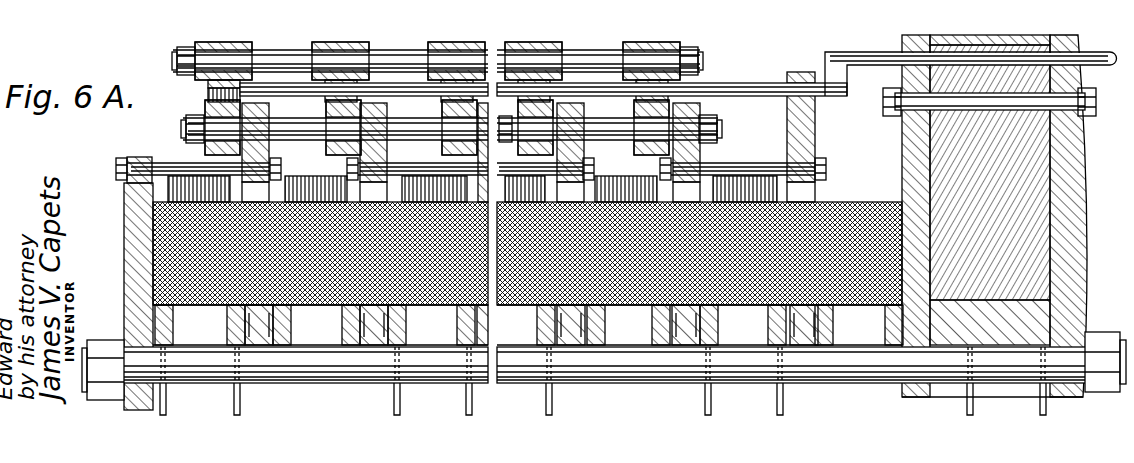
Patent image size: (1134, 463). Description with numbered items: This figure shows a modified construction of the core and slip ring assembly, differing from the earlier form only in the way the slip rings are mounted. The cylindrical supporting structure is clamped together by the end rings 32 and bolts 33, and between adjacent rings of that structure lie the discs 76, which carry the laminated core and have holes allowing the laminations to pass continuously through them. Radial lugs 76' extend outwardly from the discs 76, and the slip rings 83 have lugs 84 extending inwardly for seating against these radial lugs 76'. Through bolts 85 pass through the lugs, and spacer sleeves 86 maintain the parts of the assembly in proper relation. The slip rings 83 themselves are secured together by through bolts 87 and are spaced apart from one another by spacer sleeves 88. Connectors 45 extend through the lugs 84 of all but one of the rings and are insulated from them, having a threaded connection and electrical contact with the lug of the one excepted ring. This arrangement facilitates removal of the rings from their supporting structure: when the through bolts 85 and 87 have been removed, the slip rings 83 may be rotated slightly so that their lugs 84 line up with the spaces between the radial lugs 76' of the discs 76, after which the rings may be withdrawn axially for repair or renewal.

The through bolts 87 is at (221, 58).
The spacer sleeves 88 is at (279, 53).
The radial lugs 76' is at (292, 102).
The slip rings 83 is at (448, 42).
The lugs 84 is at (206, 108).
The through bolts 85 is at (313, 128).
The spacer sleeves 86 is at (441, 146).
The connectors 45 is at (740, 78).
The end rings 32 is at (138, 297).
The discs 76 is at (531, 325).
The bolts 33 is at (645, 367).